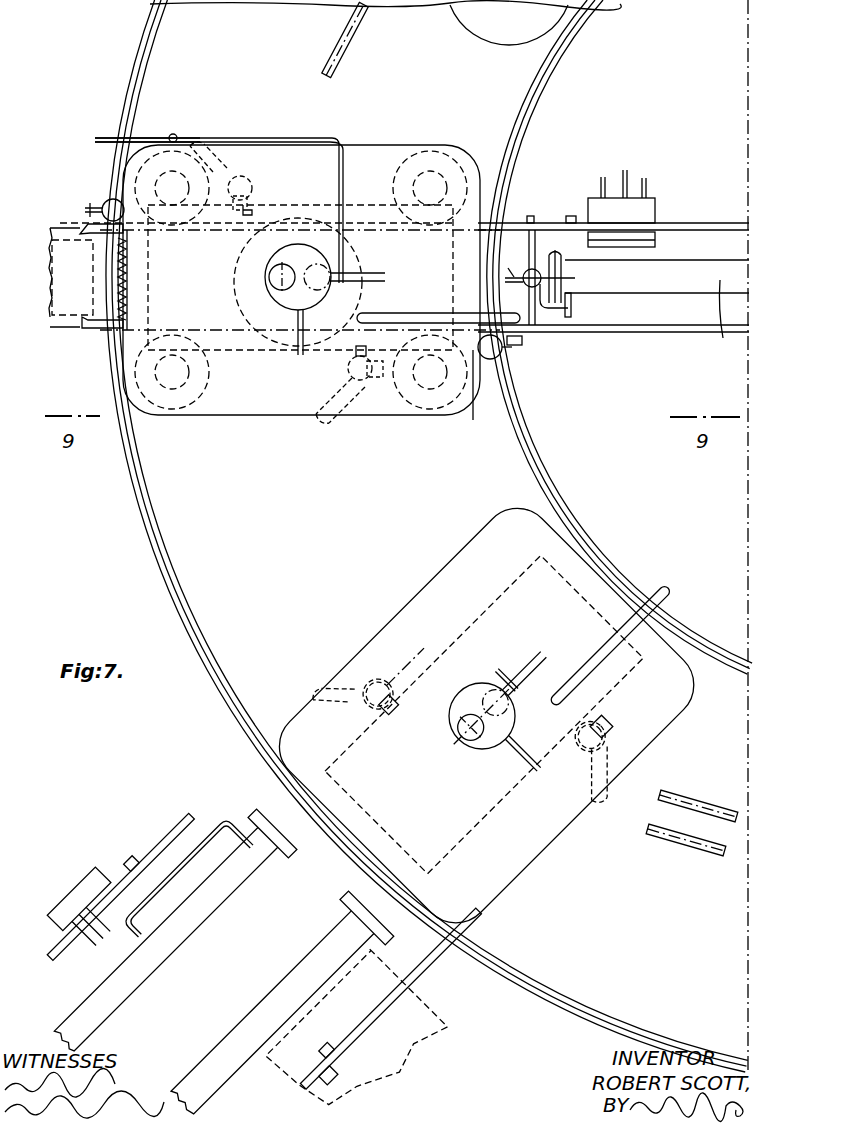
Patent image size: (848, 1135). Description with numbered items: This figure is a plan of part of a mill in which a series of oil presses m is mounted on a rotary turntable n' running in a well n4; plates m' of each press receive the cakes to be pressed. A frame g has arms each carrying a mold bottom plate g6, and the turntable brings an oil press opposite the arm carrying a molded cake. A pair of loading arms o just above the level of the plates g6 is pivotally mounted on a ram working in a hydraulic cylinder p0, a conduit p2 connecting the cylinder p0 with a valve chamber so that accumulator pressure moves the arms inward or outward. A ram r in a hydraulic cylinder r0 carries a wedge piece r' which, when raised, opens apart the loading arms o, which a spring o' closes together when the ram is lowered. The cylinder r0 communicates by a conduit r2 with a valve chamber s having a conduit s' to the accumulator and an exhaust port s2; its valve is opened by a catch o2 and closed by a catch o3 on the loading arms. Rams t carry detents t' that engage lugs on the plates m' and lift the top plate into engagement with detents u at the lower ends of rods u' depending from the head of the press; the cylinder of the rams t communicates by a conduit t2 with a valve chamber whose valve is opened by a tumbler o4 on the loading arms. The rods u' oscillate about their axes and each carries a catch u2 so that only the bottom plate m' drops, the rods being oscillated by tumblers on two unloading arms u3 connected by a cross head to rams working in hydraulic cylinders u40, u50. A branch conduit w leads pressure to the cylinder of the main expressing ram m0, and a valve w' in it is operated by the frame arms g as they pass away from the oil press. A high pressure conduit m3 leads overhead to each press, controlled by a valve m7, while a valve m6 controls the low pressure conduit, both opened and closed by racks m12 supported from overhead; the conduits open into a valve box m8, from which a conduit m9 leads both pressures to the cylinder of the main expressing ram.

The oil press m is at (415, 471).
The plates of the oil press m' is at (395, 539).
The main expressing ram m0 is at (237, 252).
The high pressure conduit m3 is at (387, 270).
The low pressure valve m6 is at (333, 291).
The high pressure valve m7 is at (268, 286).
The valve box m8 is at (307, 302).
The pressure conduit to expressing ram m9 is at (300, 358).
The racks m12 is at (352, 48).
The rotary turntable n' is at (619, 337).
The well n4 is at (233, 703).
The branch conduit w is at (306, 397).
The valve in branch conduit w' is at (145, 123).
The rams t is at (305, 283).
The detents t' is at (304, 278).
The conduit t2 is at (552, 397).
The detents u is at (414, 519).
The rods u' is at (483, 715).
The catch u2 is at (382, 688).
The unloading arms u3 is at (152, 848).
The hydraulic cylinder u40 is at (192, 932).
The hydraulic cylinder u50 is at (212, 1060).
The frame g is at (60, 230).
The mold bottom plate g6 is at (58, 327).
The loading arms o is at (613, 281).
The spring o' is at (148, 280).
The catch o2 is at (250, 215).
The catch o3 is at (571, 213).
The tumbler o4 is at (523, 344).
The valve chamber s is at (639, 222).
The conduit s' is at (662, 180).
The exhaust port s2 is at (627, 175).
The ram r is at (547, 276).
The wedge piece r' is at (546, 297).
The hydraulic cylinder r0 is at (572, 307).
The conduit r2 is at (602, 183).
The hydraulic cylinder p0 is at (713, 327).
The conduit p2 is at (568, 317).